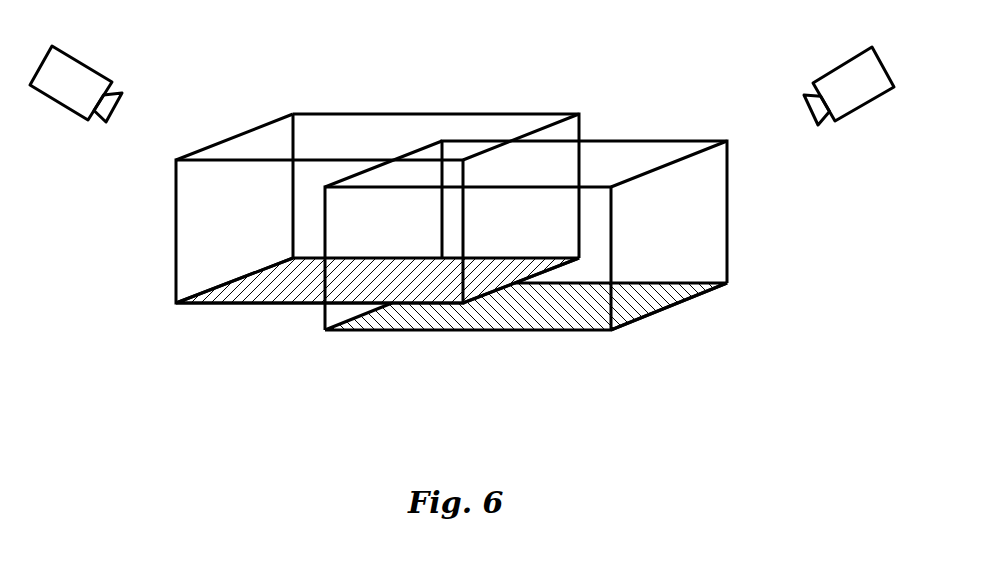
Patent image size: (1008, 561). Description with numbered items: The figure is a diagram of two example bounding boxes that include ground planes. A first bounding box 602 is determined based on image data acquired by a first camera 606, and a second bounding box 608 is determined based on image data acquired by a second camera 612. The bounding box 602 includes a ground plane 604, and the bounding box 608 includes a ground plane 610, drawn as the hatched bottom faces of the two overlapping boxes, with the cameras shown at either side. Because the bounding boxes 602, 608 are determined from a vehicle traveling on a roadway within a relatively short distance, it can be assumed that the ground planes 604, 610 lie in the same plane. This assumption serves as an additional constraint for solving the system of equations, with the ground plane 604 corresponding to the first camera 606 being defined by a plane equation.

The bounding box 602 is at (362, 114).
The ground plane 604 is at (255, 304).
The first camera 606 is at (57, 105).
The bounding box 608 is at (700, 141).
The ground plane 610 is at (575, 331).
The second camera 612 is at (865, 107).